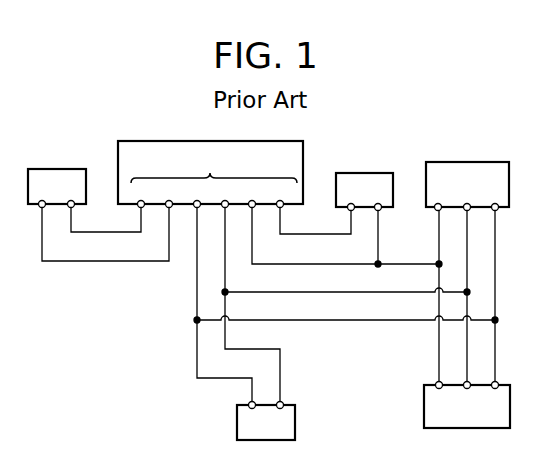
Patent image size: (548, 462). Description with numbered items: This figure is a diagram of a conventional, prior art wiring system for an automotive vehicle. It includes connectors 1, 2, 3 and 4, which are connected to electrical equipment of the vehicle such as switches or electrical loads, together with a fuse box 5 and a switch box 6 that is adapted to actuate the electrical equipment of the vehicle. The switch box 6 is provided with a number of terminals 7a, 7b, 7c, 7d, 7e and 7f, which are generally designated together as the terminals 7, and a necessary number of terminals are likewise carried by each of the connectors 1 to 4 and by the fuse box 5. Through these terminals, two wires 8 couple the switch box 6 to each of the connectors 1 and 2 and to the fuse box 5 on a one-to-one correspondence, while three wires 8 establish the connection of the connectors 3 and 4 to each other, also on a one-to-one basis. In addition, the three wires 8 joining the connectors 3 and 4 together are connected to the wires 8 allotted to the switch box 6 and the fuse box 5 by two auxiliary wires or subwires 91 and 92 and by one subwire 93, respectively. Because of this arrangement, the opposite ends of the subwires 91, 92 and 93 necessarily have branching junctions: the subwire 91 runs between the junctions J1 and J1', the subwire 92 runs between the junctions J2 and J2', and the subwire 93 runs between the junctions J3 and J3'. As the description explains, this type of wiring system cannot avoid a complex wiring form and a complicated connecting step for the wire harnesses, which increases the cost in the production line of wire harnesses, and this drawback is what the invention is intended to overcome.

The connector 1 is at (57, 188).
The connector 2 is at (266, 421).
The connector 3 is at (467, 405).
The connector 4 is at (467, 186).
The fuse box 5 is at (364, 192).
The switch box 6 is at (210, 172).
The terminals 7 is at (214, 170).
The terminal 7a is at (140, 197).
The terminal 7b is at (168, 197).
The terminal 7c is at (195, 197).
The terminal 7d is at (224, 197).
The terminal 7e is at (251, 197).
The terminal 7f is at (278, 197).
The wires 8 is at (94, 227).
The subwire 91 is at (305, 311).
The subwire 92 is at (305, 282).
The subwire 93 is at (305, 254).
The branching junction J1 is at (187, 320).
The branching junction J2 is at (215, 292).
The branching junction J3 is at (386, 239).
The branching junction J1' is at (504, 318).
The branching junction J2' is at (476, 290).
The branching junction J3' is at (448, 262).